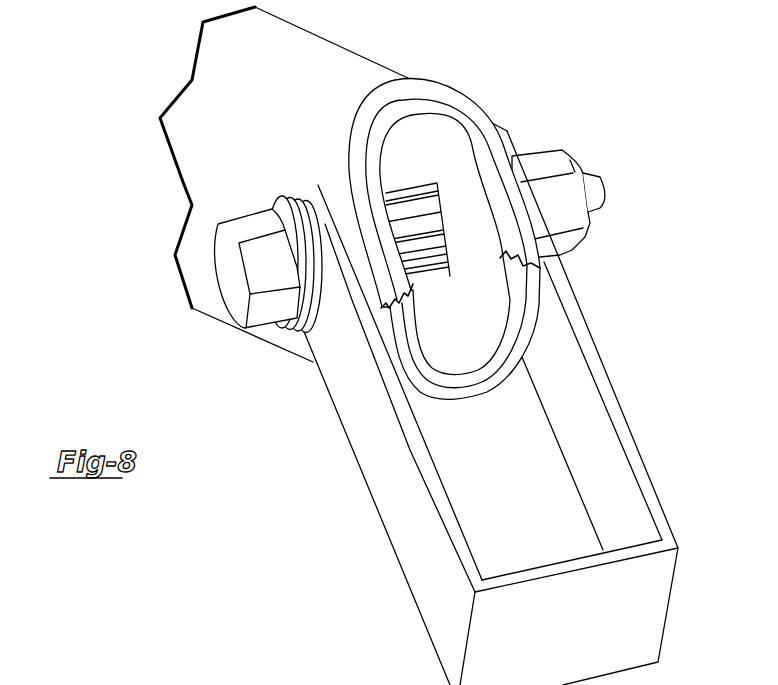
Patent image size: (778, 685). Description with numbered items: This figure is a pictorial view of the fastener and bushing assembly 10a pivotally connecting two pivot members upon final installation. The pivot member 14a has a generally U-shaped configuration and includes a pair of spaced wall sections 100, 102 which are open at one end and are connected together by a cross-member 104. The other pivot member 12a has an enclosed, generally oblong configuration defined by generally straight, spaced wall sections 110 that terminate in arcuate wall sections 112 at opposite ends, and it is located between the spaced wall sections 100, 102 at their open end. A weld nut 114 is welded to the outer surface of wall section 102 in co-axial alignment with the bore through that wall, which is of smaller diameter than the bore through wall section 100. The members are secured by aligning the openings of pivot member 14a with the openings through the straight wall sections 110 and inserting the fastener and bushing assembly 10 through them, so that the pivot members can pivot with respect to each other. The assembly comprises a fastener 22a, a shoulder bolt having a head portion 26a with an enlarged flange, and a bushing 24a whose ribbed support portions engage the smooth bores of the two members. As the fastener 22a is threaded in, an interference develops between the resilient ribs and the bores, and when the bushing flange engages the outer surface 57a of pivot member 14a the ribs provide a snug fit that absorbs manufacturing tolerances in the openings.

The pivot member 12a is at (333, 65).
The head portion 26a is at (242, 227).
The fastener 22a is at (260, 320).
The fastener and bushing assembly 10 is at (426, 274).
The arcuate wall sections 112 is at (402, 122).
The straight wall sections 110 is at (505, 256).
The bushing 24a is at (427, 191).
The fastener and bushing assembly 10a is at (585, 163).
The weld nut 114 is at (573, 193).
The wall section 102 is at (603, 380).
The outer surface 57a is at (370, 401).
The wall section 100 is at (468, 408).
The pivot member 14a is at (372, 547).
The cross-member 104 is at (558, 572).